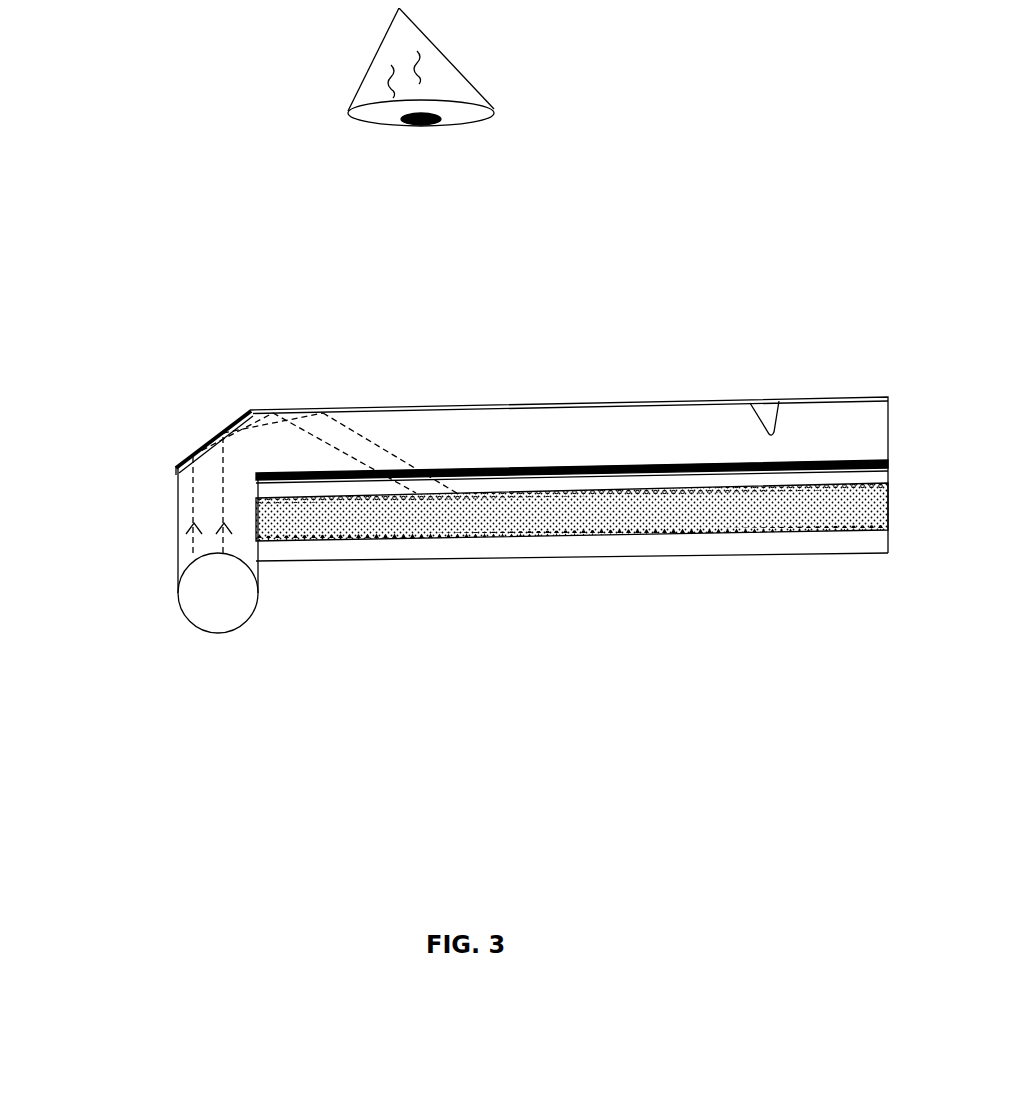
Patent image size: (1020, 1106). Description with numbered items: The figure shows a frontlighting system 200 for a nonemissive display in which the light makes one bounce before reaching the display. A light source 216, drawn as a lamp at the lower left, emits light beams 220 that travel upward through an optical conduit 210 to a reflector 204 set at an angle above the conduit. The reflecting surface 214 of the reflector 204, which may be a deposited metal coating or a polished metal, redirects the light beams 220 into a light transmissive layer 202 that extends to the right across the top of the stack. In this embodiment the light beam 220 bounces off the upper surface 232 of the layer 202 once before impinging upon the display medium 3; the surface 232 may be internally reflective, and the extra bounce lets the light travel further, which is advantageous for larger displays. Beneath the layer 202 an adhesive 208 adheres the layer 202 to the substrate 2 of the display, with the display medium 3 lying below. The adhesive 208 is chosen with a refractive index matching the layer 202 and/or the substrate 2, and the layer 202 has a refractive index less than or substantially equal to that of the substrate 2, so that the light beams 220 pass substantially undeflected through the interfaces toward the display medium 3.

The frontlighting system 200 is at (83, 312).
The layer 202 is at (627, 432).
The reflector 204 is at (210, 418).
The adhesive 208 is at (597, 470).
The optical conduit 210 is at (175, 540).
The reflecting surface 214 is at (176, 462).
The light source 216 is at (230, 607).
The light beams 220 is at (308, 436).
The upper surface 232 is at (775, 432).
The substrate 2 is at (552, 478).
The display medium 3 is at (543, 510).